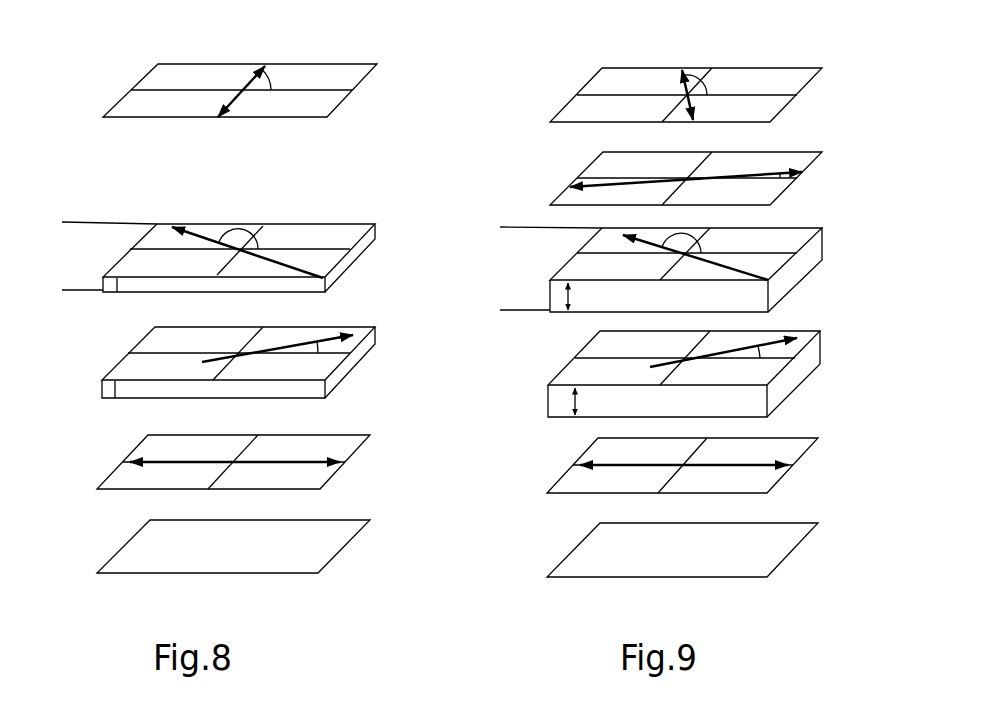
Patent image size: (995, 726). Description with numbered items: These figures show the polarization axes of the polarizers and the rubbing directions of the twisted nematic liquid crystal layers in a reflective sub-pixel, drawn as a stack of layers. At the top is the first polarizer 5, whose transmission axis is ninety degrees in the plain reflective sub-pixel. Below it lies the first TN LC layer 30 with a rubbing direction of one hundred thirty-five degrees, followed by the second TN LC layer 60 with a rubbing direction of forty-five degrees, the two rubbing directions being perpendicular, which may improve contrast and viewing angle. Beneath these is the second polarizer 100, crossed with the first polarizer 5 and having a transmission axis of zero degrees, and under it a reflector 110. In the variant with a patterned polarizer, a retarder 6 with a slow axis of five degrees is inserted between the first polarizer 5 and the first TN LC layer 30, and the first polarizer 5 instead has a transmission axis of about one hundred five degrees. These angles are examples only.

In FIG. 8, the first polarizer 5 is at (358, 85).
In FIG. 9, the first polarizer 5 is at (561, 110).
In FIG. 9, the retarder 6 is at (586, 168).
In FIG. 8, the first TN LC layer 30 is at (197, 224).
In FIG. 9, the first TN LC layer 30 is at (577, 250).
In FIG. 8, the second TN LC layer 60 is at (134, 348).
In FIG. 9, the second TN LC layer 60 is at (575, 356).
In FIG. 8, the second polarizer 100 is at (128, 453).
In FIG. 9, the second polarizer 100 is at (580, 453).
In FIG. 8, the reflector 110 is at (128, 537).
In FIG. 9, the reflector 110 is at (578, 543).